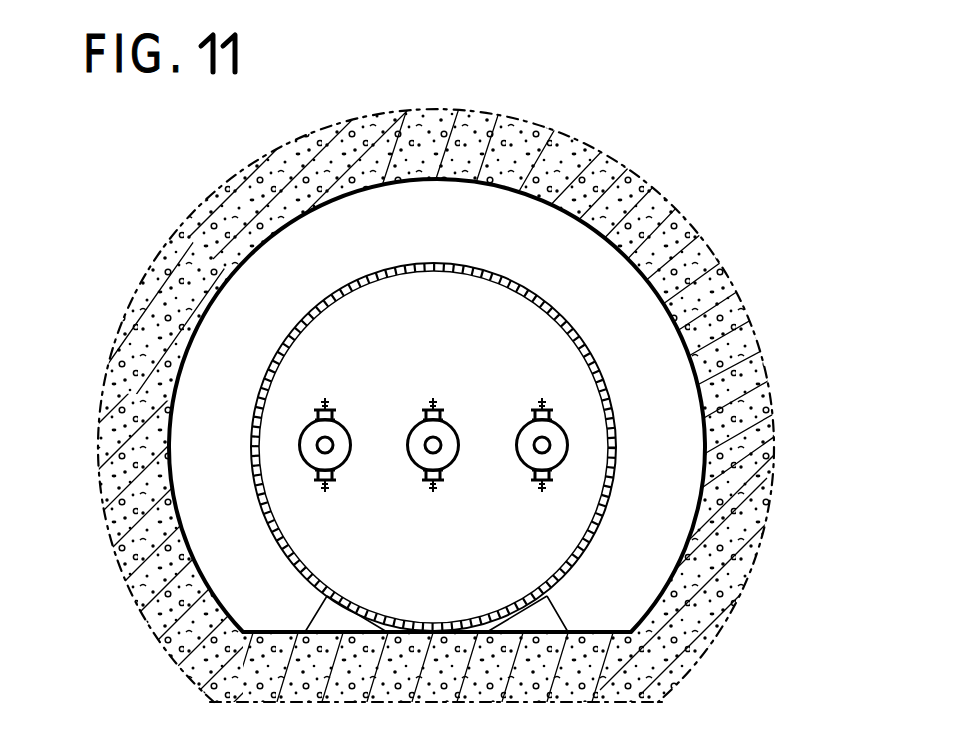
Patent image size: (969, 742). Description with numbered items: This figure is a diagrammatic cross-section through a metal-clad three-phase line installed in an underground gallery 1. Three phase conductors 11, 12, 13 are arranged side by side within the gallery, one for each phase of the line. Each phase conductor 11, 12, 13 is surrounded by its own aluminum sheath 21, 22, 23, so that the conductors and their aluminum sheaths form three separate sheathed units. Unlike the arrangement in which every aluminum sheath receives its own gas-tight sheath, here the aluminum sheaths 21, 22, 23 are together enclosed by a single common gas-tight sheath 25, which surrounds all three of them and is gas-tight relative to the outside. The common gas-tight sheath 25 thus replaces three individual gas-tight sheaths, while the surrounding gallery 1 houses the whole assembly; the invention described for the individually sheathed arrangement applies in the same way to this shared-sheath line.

The underground gallery 1 is at (279, 228).
The phase conductor 11 is at (335, 433).
The phase conductor 12 is at (443, 433).
The phase conductor 13 is at (551, 433).
The aluminum sheath 21 is at (348, 466).
The aluminum sheath 22 is at (456, 466).
The aluminum sheath 23 is at (564, 466).
The common gas-tight sheath 25 is at (508, 282).